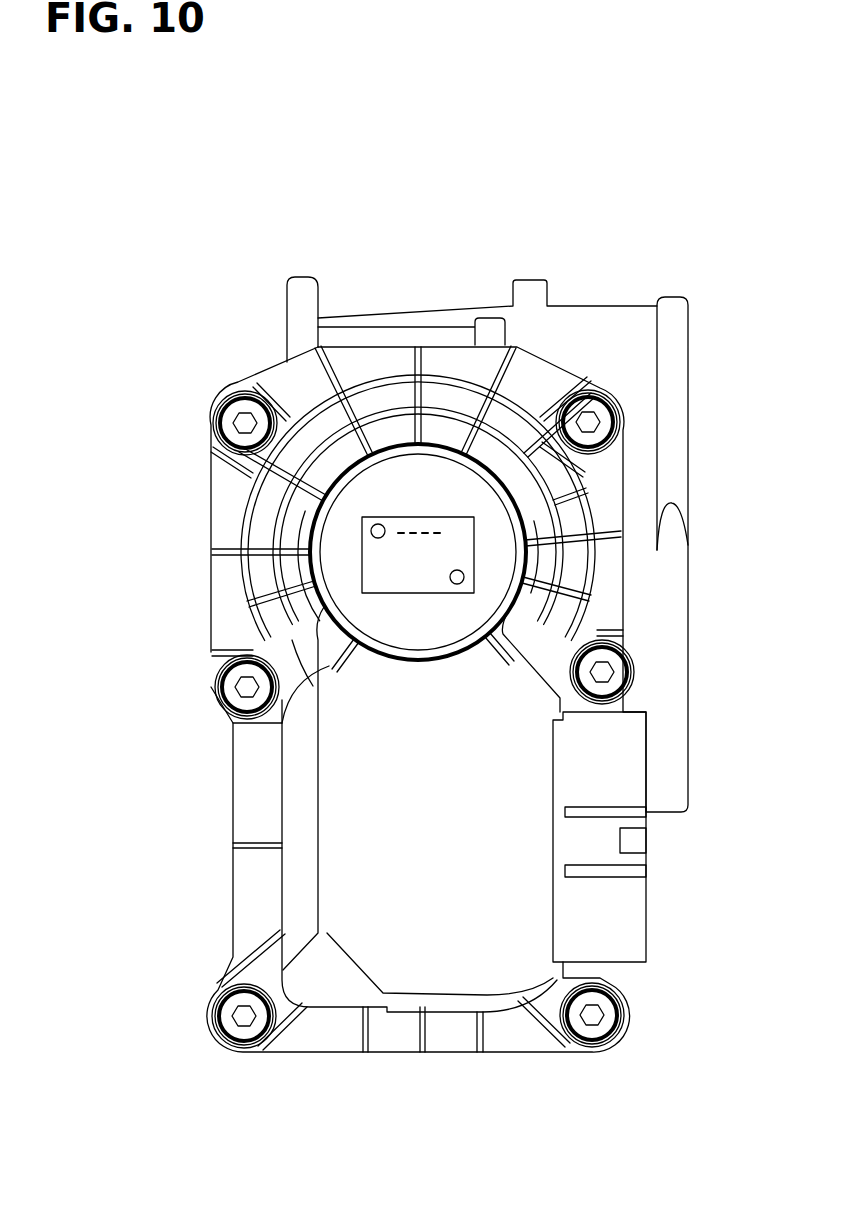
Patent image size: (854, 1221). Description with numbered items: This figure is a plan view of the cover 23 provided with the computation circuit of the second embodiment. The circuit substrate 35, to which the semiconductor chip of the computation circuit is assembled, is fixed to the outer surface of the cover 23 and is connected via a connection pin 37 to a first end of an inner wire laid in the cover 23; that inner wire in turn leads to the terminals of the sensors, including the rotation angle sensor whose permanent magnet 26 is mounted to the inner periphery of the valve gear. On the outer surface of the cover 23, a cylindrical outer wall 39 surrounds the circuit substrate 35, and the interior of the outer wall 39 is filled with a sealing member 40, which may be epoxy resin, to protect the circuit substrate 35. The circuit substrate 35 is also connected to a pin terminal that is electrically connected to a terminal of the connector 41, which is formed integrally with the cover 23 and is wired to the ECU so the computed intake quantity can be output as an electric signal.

The cover 23 is at (370, 355).
The permanent magnet 26 is at (247, 420).
The circuit substrate 35 is at (452, 546).
The connection pin 37 is at (372, 530).
The outer wall 39 is at (315, 563).
The sealing member 40 is at (343, 592).
The connector 41 is at (637, 900).